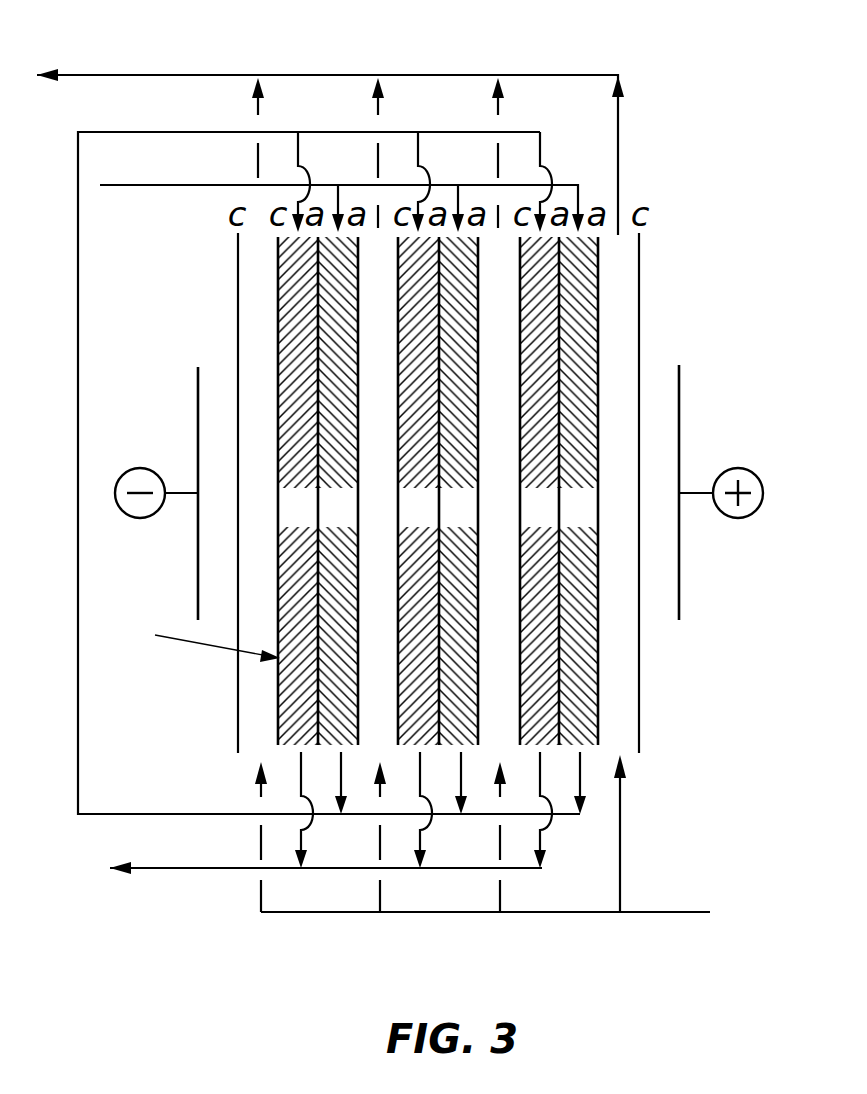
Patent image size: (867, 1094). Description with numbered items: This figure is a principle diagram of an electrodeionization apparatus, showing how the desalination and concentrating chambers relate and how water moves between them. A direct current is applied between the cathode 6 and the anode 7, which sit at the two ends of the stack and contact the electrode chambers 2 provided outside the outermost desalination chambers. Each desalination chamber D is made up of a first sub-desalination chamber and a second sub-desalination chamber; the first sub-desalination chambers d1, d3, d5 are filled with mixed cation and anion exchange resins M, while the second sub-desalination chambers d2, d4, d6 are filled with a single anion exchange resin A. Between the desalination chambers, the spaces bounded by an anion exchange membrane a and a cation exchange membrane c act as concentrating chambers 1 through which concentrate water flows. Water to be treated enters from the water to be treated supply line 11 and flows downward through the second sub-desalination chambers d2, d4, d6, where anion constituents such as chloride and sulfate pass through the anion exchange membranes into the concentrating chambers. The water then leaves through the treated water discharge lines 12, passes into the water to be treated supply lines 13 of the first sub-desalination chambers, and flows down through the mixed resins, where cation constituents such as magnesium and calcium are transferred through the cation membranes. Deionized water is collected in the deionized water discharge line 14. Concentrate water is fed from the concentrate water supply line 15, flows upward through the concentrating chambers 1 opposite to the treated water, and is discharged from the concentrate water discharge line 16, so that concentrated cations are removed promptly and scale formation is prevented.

The concentrating chamber 1 is at (457, 484).
The electrode chamber 2 is at (215, 437).
The cathode 6 is at (198, 382).
The anode 7 is at (682, 400).
The water to be treated supply line 11 is at (195, 185).
The treated water discharge line 12 is at (341, 777).
The water to be treated supply line of first sub-desalination chamber 13 is at (298, 132).
The deionized water discharge line 14 is at (160, 868).
The concentrate water supply line 15 is at (633, 912).
The concentrate water discharge line 16 is at (190, 75).
The first sub-desalination chamber d1 is at (298, 577).
The second sub-desalination chamber d2 is at (337, 617).
The first sub-desalination chamber d3 is at (425, 568).
The second sub-desalination chamber d4 is at (460, 622).
The first sub-desalination chamber d5 is at (543, 672).
The second sub-desalination chamber d6 is at (585, 718).
The desalination chamber D is at (199, 641).